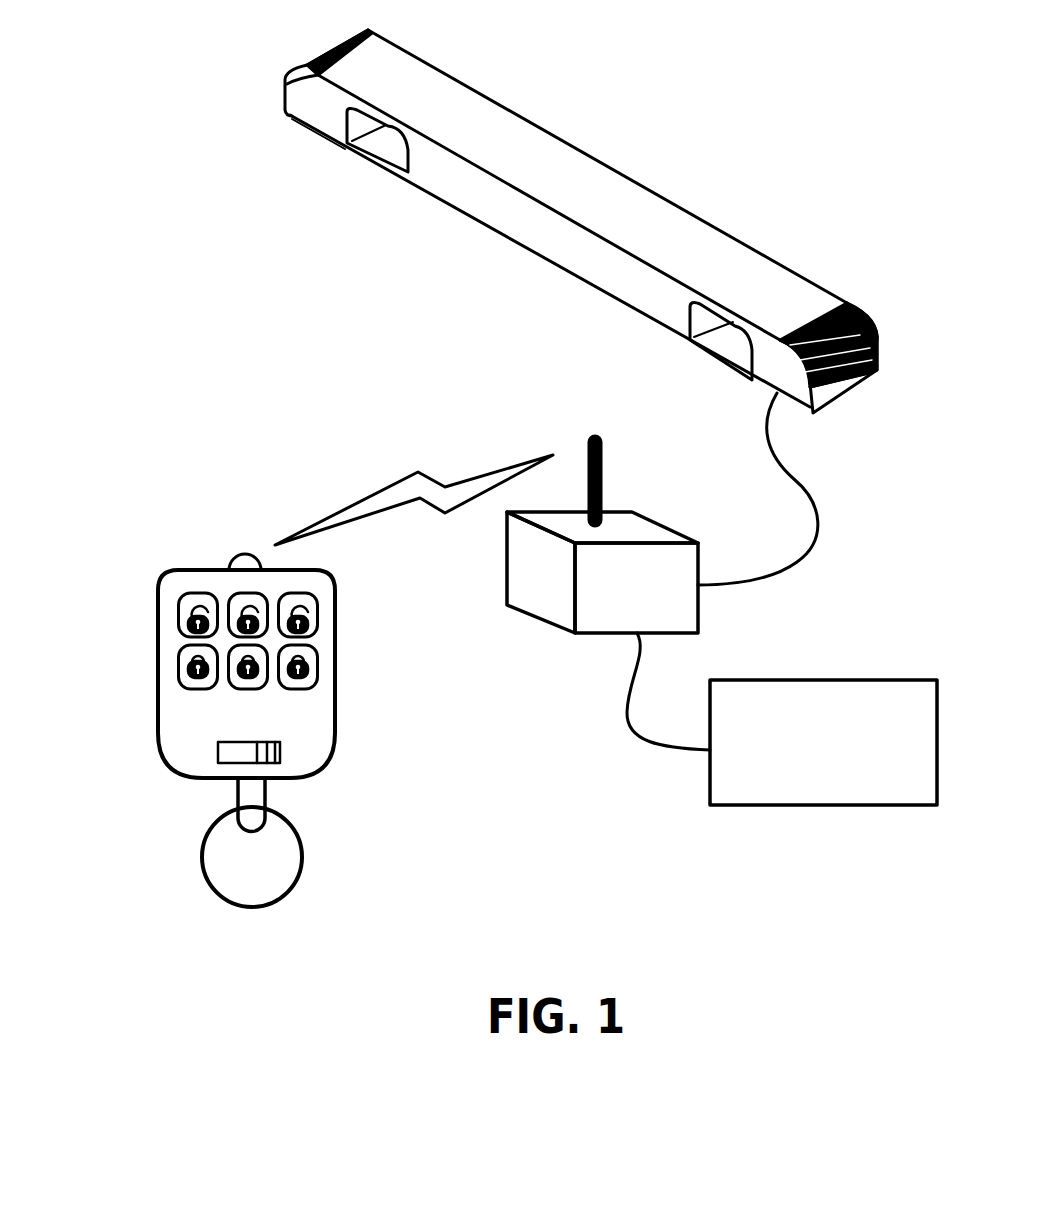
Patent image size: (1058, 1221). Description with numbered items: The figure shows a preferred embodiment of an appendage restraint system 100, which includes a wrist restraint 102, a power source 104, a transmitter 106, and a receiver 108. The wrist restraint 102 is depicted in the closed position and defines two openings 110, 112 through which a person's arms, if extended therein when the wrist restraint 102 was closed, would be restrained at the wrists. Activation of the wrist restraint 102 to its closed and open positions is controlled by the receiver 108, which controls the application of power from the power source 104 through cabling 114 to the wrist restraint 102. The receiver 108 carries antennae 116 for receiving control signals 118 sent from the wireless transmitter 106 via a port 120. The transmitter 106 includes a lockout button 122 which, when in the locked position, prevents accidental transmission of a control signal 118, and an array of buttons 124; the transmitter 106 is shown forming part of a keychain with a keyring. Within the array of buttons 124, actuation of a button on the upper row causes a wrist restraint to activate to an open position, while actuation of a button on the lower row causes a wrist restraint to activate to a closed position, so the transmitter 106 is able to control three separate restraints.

The appendage restraint system 100 is at (118, 185).
The wrist restraint 102 is at (685, 167).
The power source 104 is at (840, 678).
The transmitter 106 is at (127, 650).
The receiver 108 is at (648, 528).
The opening 110 is at (388, 136).
The opening 112 is at (728, 333).
The cabling 114 is at (814, 482).
The antennae 116 is at (603, 443).
The control signals 118 is at (420, 472).
The port 120 is at (245, 556).
The lockout button 122 is at (282, 752).
The array of buttons 124 is at (317, 648).